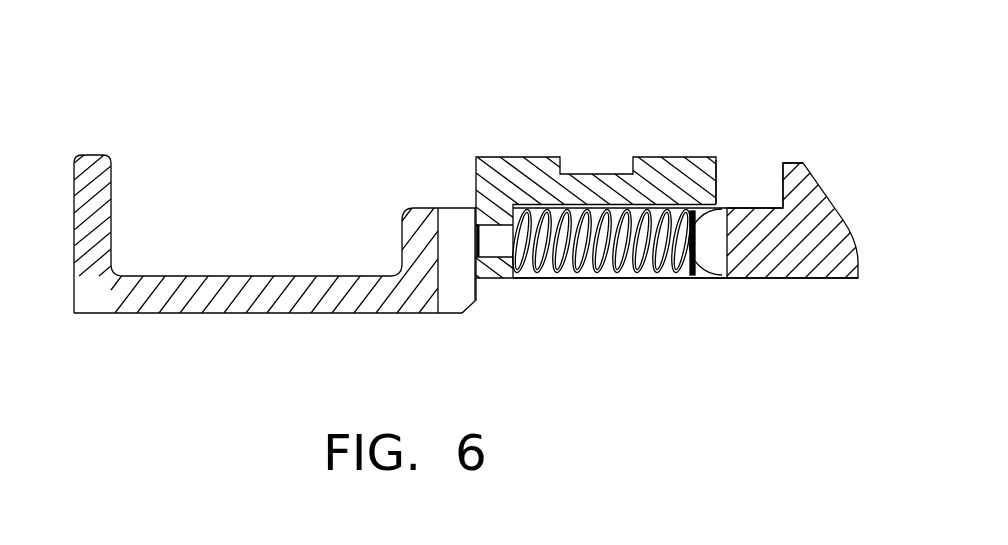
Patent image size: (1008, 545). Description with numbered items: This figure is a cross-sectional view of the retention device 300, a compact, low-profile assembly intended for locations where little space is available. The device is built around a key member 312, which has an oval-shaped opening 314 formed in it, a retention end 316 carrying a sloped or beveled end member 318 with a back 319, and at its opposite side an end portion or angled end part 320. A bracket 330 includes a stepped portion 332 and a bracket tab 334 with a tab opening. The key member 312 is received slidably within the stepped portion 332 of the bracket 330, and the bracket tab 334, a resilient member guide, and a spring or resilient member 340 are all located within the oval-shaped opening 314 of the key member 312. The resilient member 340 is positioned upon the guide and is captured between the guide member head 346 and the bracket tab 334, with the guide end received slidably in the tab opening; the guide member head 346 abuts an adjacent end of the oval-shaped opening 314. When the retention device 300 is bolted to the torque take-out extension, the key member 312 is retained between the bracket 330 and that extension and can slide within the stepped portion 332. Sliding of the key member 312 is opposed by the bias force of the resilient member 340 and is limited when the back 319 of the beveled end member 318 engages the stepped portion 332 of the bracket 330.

The retention device 300 is at (255, 73).
The key member 312 is at (245, 167).
The oval-shaped opening 314 is at (713, 280).
The retention end 316 is at (775, 282).
The beveled end member 318 is at (830, 203).
The back 319 is at (784, 187).
The angled end part 320 is at (82, 313).
The bracket 330 is at (512, 158).
The stepped portion 332 is at (718, 178).
The bracket tab 334 is at (497, 280).
The resilient member 340 is at (632, 278).
The guide member head 346 is at (712, 240).